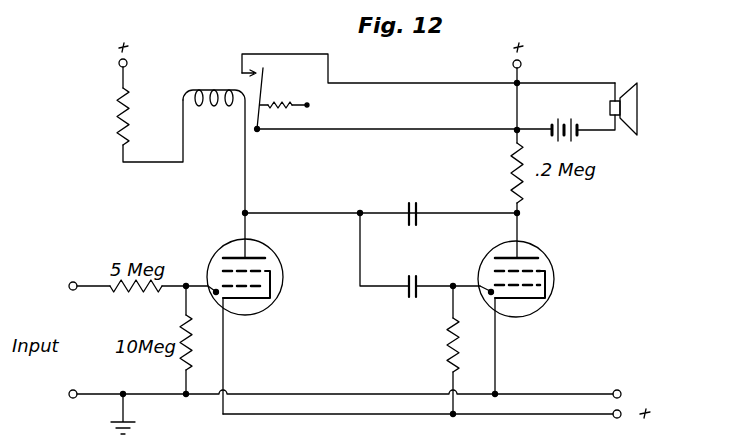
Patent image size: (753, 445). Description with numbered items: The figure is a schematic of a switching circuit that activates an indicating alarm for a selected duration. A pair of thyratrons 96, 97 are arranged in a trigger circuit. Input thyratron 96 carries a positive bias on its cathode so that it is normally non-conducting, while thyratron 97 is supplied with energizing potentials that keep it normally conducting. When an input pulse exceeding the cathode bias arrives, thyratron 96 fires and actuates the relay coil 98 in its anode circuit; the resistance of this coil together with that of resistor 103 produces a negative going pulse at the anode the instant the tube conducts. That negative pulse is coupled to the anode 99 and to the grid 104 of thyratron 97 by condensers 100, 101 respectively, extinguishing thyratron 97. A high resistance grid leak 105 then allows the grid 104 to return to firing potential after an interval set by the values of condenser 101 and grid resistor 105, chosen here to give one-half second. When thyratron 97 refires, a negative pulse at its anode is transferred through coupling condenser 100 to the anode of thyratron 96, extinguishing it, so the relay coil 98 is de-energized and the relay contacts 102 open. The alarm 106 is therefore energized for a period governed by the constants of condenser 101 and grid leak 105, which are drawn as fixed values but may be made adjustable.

The input thyratron 96 is at (282, 232).
The thyratron 97 is at (553, 246).
The relay coil 98 is at (224, 92).
The anode 99 is at (504, 255).
The condenser 100 is at (407, 203).
The condenser 101 is at (406, 291).
The relay contacts 102 is at (265, 81).
The resistor 103 is at (116, 112).
The grid 104 is at (495, 283).
The grid leak 105 is at (450, 337).
The alarm 106 is at (638, 93).